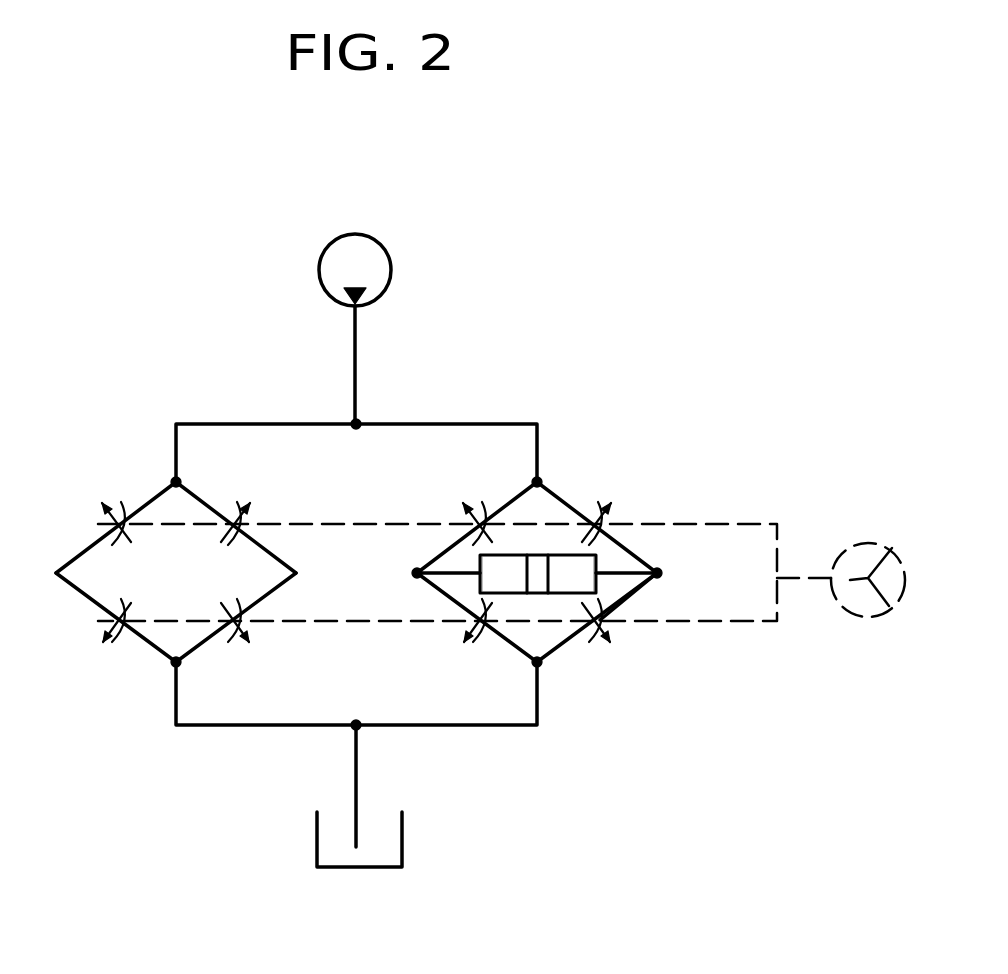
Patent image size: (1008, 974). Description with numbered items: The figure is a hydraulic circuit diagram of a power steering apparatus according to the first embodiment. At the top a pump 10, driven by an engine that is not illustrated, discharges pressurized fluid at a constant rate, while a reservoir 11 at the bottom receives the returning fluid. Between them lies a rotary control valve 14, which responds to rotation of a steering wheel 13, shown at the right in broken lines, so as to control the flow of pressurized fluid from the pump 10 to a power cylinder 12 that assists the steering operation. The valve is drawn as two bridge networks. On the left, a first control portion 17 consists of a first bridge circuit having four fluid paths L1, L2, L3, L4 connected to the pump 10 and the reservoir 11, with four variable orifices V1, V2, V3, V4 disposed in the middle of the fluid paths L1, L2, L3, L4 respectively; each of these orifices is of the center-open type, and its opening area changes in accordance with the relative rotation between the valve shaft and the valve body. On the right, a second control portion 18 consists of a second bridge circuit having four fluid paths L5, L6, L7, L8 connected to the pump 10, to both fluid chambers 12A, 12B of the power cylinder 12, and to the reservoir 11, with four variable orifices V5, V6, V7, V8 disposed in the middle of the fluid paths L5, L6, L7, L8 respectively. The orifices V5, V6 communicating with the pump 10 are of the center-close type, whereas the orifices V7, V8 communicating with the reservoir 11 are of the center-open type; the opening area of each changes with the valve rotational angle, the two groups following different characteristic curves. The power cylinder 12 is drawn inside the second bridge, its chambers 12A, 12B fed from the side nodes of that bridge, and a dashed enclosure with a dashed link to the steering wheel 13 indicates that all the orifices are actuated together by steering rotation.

The pump 10 is at (391, 265).
The reservoir 11 is at (352, 868).
The power cylinder 12 is at (531, 519).
The fluid chamber 12A is at (490, 583).
The fluid chamber 12B is at (585, 572).
The steering wheel 13 is at (880, 546).
The rotary control valve 14 is at (606, 684).
The first control portion 17 is at (174, 539).
The second control portion 18 is at (531, 556).
The fluid path L1 is at (147, 498).
The fluid path L2 is at (200, 498).
The fluid path L3 is at (142, 642).
The fluid path L4 is at (205, 645).
The fluid path L5 is at (512, 498).
The fluid path L6 is at (577, 510).
The fluid path L7 is at (510, 645).
The fluid path L8 is at (557, 652).
The variable orifice V1 is at (93, 512).
The variable orifice V2 is at (254, 512).
The variable orifice V3 is at (94, 636).
The variable orifice V4 is at (252, 636).
The variable orifice V5 is at (454, 513).
The variable orifice V6 is at (616, 513).
The variable orifice V7 is at (455, 638).
The variable orifice V8 is at (613, 638).